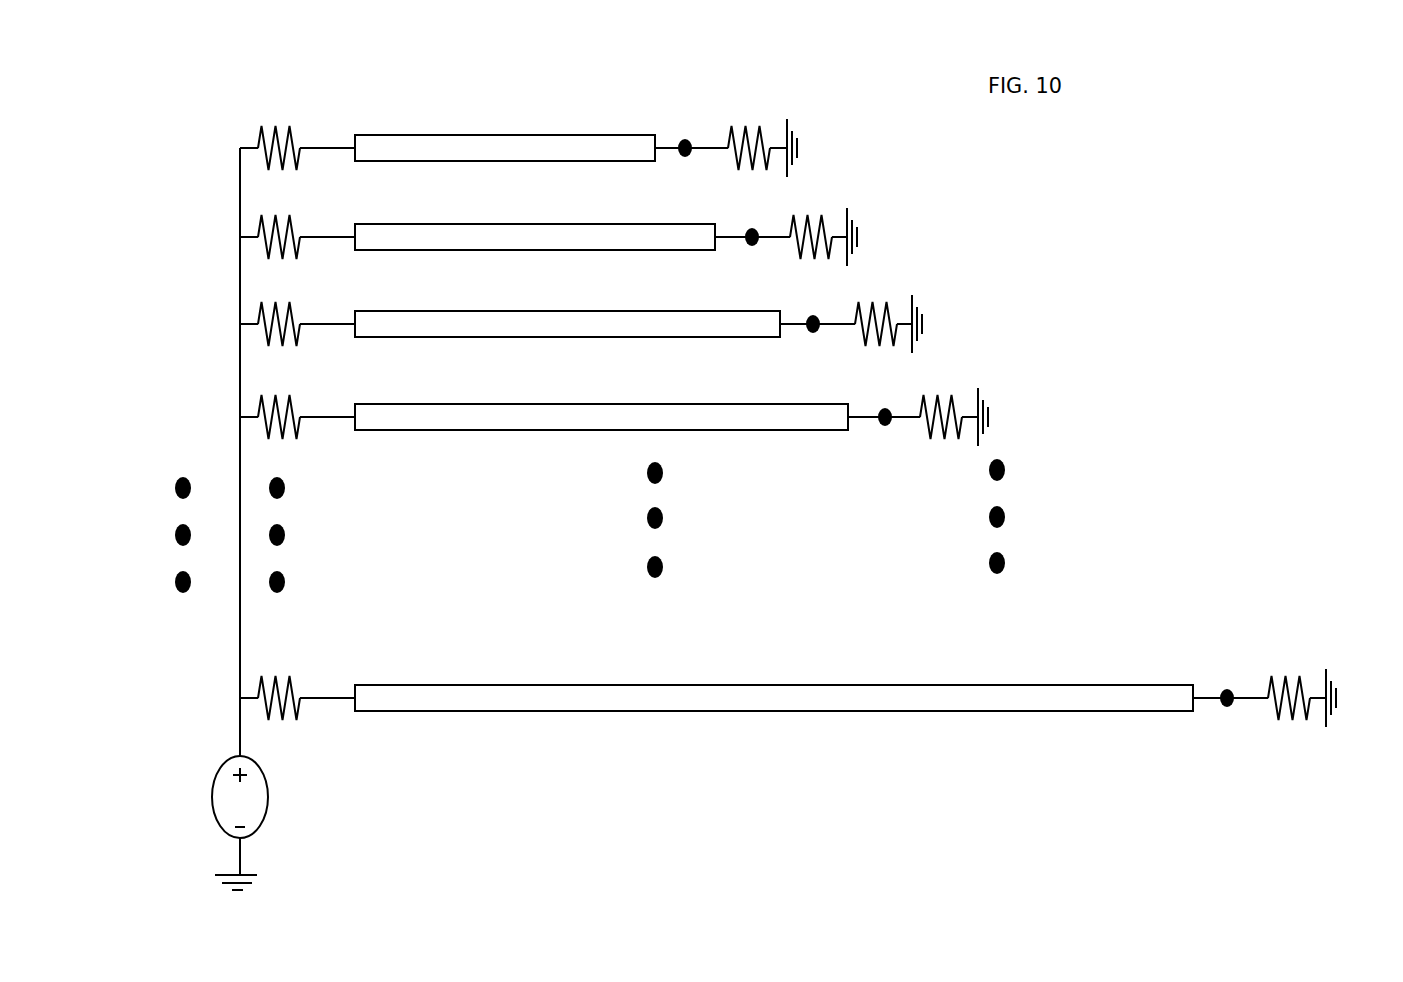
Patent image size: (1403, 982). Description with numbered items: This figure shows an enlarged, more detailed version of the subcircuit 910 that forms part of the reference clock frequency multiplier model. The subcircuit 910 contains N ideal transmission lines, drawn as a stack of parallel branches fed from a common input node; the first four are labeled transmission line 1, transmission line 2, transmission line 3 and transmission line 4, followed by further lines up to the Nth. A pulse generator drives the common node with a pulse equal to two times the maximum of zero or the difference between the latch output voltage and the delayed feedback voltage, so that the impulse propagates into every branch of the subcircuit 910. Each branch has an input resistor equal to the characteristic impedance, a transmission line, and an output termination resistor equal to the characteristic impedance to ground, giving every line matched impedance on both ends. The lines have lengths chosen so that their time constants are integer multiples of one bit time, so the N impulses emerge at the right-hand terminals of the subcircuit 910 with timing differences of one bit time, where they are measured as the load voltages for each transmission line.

The subcircuit 910 is at (1086, 205).
The transmission line TL1 1 is at (486, 127).
The transmission line TL2 2 is at (516, 217).
The transmission line TL3 3 is at (551, 304).
The transmission line TL4 4 is at (585, 393).